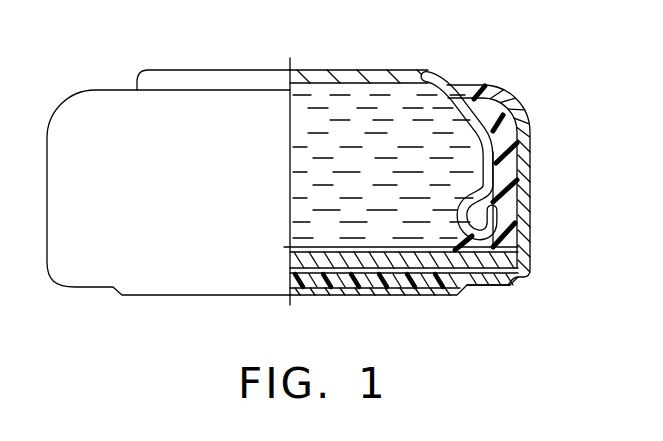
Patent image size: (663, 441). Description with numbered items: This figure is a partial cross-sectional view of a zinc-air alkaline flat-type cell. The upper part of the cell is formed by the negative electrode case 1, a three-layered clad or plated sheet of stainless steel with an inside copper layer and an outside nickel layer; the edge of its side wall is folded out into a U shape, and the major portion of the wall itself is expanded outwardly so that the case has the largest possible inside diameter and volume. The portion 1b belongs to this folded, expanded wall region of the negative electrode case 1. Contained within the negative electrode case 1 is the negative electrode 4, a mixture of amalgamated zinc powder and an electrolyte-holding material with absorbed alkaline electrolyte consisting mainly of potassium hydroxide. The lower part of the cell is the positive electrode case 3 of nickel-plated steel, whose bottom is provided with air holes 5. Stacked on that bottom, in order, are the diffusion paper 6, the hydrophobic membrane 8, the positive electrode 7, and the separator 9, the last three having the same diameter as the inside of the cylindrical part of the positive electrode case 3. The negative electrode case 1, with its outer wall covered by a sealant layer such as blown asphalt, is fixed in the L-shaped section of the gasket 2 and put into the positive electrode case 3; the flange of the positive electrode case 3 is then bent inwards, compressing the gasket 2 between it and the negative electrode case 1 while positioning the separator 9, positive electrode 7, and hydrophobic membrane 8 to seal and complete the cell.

The negative electrode case 1 is at (446, 76).
The case lid portion 1b is at (310, 70).
The gasket 2 is at (510, 92).
The positive electrode case 3 is at (333, 288).
The negative electrode 4 is at (360, 92).
The air holes 5 is at (387, 290).
The diffusion paper 6 is at (295, 287).
The positive electrode 7 is at (300, 258).
The hydrophobic membrane 8 is at (510, 285).
The separator 9 is at (357, 247).